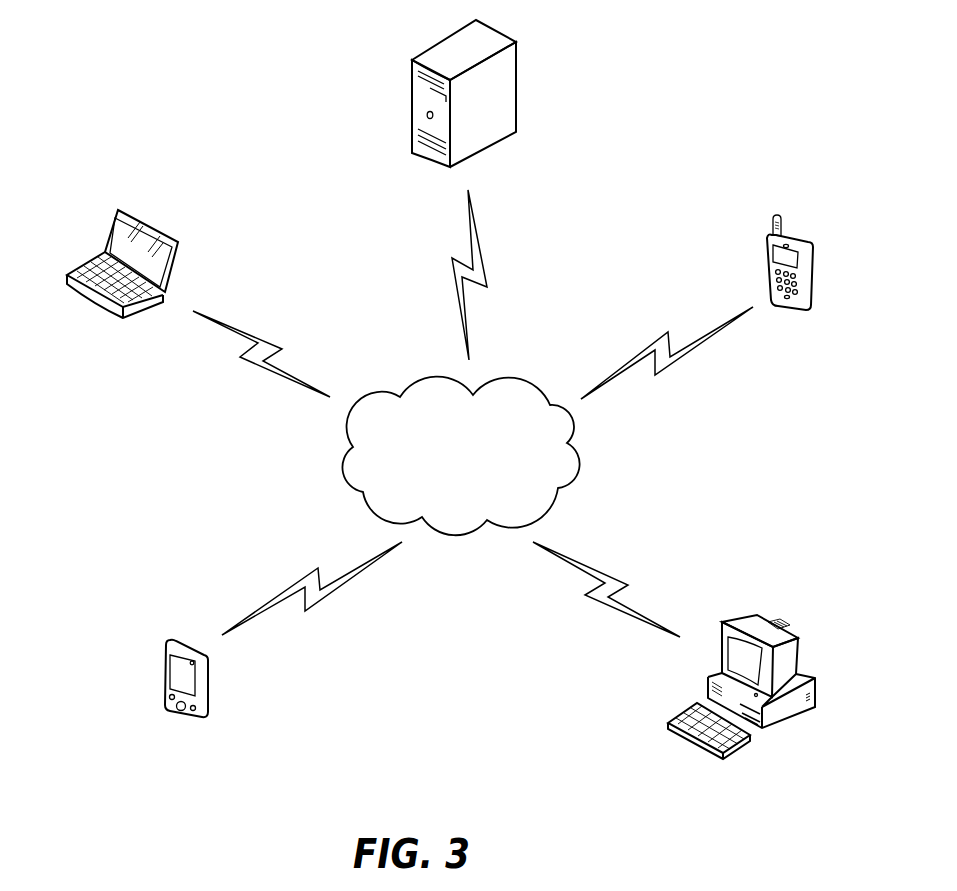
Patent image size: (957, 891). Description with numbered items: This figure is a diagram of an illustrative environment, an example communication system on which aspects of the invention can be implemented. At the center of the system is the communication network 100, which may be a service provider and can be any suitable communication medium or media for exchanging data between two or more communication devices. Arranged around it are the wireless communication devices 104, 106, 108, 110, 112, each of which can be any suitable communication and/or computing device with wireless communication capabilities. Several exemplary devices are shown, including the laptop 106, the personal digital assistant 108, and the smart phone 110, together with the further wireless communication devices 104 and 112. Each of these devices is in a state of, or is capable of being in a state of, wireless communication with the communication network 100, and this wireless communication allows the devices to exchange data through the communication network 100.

The communication network 100 is at (402, 390).
The wireless communication device 104 is at (448, 36).
The laptop 106 is at (120, 208).
The personal digital assistant 108 is at (165, 645).
The smart phone 110 is at (797, 235).
The wireless communication device 112 is at (737, 620).